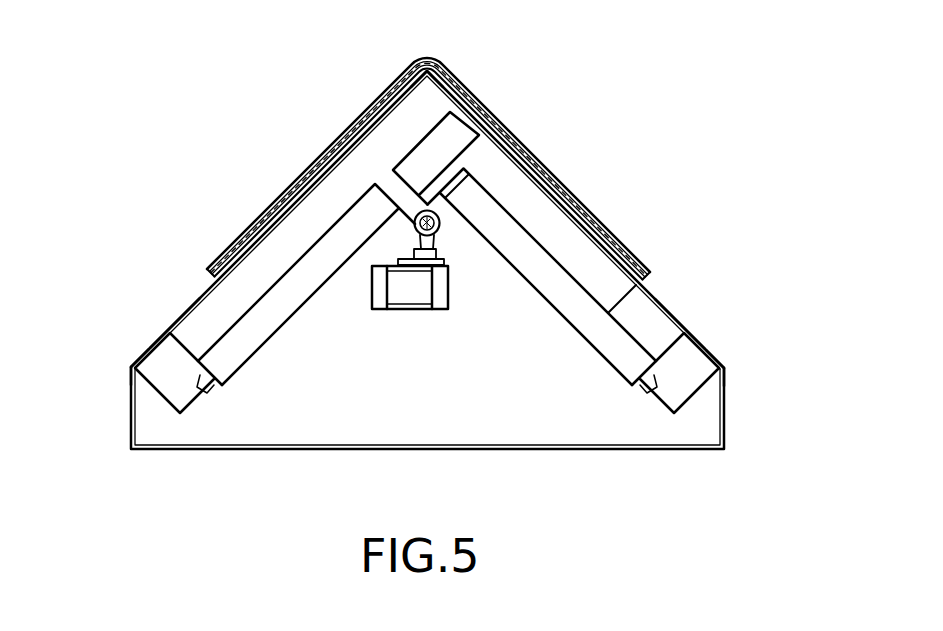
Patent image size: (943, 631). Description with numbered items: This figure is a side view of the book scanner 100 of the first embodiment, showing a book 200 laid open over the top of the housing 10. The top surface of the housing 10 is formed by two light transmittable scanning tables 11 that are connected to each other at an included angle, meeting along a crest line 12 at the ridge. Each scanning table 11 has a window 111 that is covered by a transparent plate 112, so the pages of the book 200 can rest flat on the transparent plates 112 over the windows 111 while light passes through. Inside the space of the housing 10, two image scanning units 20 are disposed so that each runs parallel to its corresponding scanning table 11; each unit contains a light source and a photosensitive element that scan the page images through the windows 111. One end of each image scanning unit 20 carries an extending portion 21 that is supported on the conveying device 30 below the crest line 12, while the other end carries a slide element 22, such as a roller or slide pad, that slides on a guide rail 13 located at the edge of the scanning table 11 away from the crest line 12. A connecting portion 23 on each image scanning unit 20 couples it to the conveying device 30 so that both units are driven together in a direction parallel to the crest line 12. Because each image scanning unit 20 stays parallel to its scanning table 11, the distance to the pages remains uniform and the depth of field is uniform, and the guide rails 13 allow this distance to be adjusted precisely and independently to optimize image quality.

The book scanner 100 is at (207, 49).
The housing 10 is at (727, 424).
The scanning table 11 is at (168, 327).
The window 111 is at (142, 354).
The transparent plate 112 is at (158, 342).
The crest line 12 is at (438, 63).
The guide rail 13 is at (175, 414).
The image scanning unit 20 is at (288, 285).
The extending portion 21 is at (408, 205).
The slide element 22 is at (207, 394).
The connecting portion 23 is at (441, 224).
The conveying device 30 is at (399, 321).
The book 200 is at (563, 182).